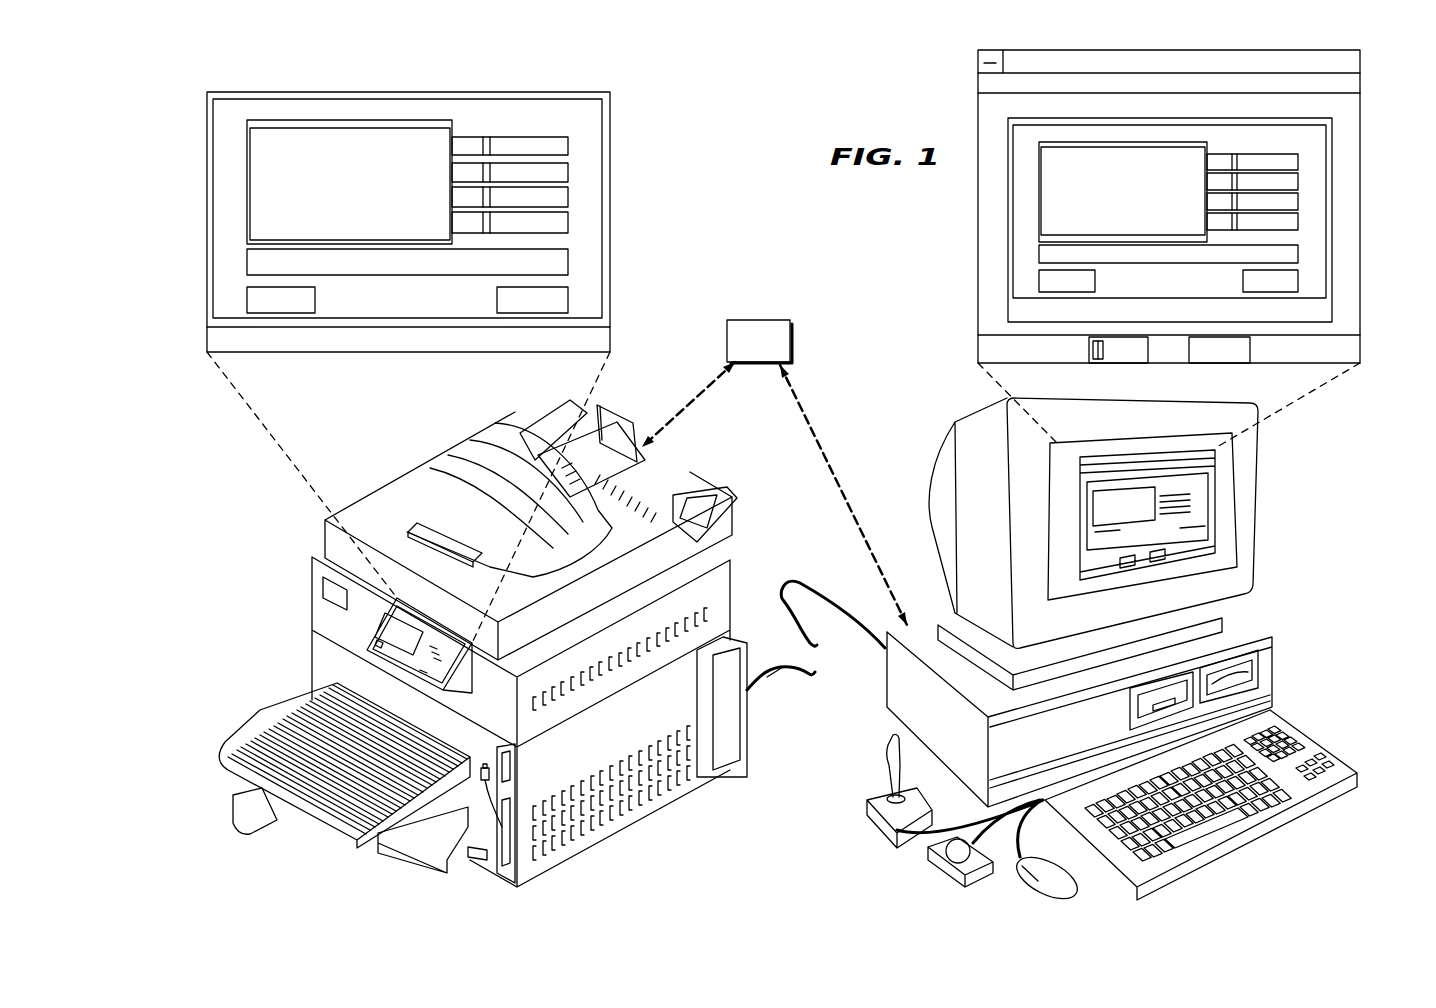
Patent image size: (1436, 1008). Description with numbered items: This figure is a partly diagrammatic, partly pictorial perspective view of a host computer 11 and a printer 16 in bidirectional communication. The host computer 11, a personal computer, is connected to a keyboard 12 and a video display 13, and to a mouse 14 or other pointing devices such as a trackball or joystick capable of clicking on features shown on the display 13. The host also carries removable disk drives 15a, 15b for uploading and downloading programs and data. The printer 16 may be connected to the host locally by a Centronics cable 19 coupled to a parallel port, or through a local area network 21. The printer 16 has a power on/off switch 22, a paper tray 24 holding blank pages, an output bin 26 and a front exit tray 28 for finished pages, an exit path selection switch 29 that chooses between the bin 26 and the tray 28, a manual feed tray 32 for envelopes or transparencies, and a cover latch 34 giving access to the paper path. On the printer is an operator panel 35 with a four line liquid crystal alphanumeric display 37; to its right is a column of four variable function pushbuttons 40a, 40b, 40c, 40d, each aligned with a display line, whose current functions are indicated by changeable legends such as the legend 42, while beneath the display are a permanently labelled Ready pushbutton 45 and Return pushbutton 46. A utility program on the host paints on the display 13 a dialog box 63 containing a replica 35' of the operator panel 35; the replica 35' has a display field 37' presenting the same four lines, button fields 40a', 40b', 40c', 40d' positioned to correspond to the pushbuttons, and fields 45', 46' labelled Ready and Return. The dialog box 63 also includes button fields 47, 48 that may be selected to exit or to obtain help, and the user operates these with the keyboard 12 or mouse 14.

The host computer 11 is at (1252, 615).
The keyboard 12 is at (1263, 827).
The video display 13 is at (953, 417).
The mouse 14 is at (867, 800).
The removable disk drive 15a is at (1263, 672).
The removable disk drive 15b is at (1137, 718).
The printer 16 is at (645, 838).
The Centronics cable 19 is at (803, 678).
The local area network (LAN) 21 is at (790, 338).
The power on/off switch 22 is at (320, 673).
The paper tray 24 is at (407, 850).
The output bin 26 is at (473, 497).
The front exit tray 28 is at (258, 720).
The exit path selection switch 29 is at (502, 827).
The manual feed tray 32 is at (667, 460).
The cover latch 34 is at (430, 518).
The operator panel 35 is at (408, 372).
The replica of operator panel 35' is at (1169, 269).
The liquid crystal alphanumeric display 37 is at (349, 182).
The display field 37' is at (1123, 192).
The variable function pushbutton 40a is at (564, 142).
The variable function pushbutton 40b is at (564, 168).
The variable function pushbutton 40c is at (564, 193).
The variable function pushbutton 40d is at (564, 218).
The variable function button field 40a' is at (1316, 147).
The variable function button field 40b' is at (1316, 174).
The variable function button field 40c' is at (1316, 207).
The variable function button field 40d' is at (1316, 240).
The legend 42 is at (382, 148).
The Ready pushbutton 45 is at (232, 298).
The Ready field 45' is at (1005, 271).
The Return pushbutton 46 is at (586, 300).
The Return field 46' is at (1328, 296).
The exit button field 47 is at (1089, 350).
The help button field 48 is at (1250, 351).
The dialog box 63 is at (1062, 564).